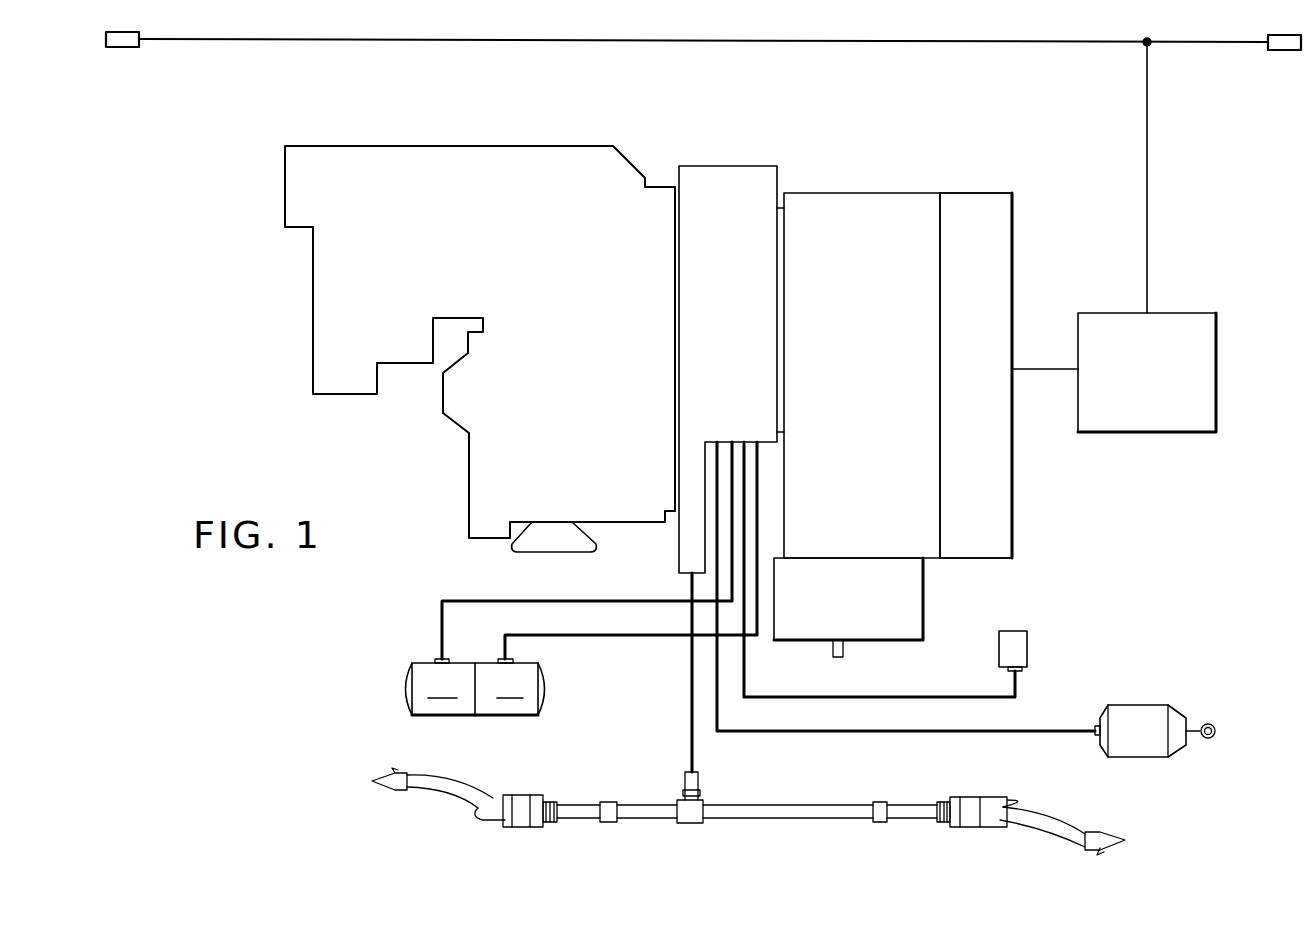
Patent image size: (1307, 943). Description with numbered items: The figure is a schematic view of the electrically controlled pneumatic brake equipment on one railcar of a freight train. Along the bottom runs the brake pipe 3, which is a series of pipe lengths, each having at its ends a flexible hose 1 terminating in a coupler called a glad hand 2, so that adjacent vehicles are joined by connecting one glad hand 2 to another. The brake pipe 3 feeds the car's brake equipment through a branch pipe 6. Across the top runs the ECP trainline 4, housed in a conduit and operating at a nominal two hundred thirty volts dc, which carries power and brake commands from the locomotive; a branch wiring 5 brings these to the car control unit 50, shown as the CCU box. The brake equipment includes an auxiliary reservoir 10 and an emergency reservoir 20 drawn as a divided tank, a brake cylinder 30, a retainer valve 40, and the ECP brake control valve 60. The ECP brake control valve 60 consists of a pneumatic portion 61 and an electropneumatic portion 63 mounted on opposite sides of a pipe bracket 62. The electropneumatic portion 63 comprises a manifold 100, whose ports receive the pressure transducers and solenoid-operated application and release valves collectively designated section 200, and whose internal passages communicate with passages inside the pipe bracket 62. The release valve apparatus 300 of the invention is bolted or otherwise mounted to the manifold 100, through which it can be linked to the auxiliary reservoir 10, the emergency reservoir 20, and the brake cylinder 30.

The flexible hose 1 is at (460, 790).
The glad hand 2 is at (390, 793).
The brake pipe 3 is at (777, 812).
The ECP trainline 4 is at (228, 39).
The branch wiring 5 is at (1147, 196).
The branch pipe 6 is at (686, 732).
The auxiliary reservoir 10 is at (616, 578).
The emergency reservoir 20 is at (569, 578).
The brake cylinder 30 is at (1148, 705).
The retainer valve 40 is at (1008, 631).
The car control unit 50 is at (1177, 313).
The ECP brake control valve 60 is at (601, 330).
The pneumatic portion 61 is at (478, 145).
The pipe bracket 62 is at (733, 166).
The electropneumatic portion 63 is at (980, 180).
The manifold 100 is at (870, 193).
The section of transducers and solenoid valves 200 is at (1052, 277).
The release valve apparatus 300 is at (893, 642).